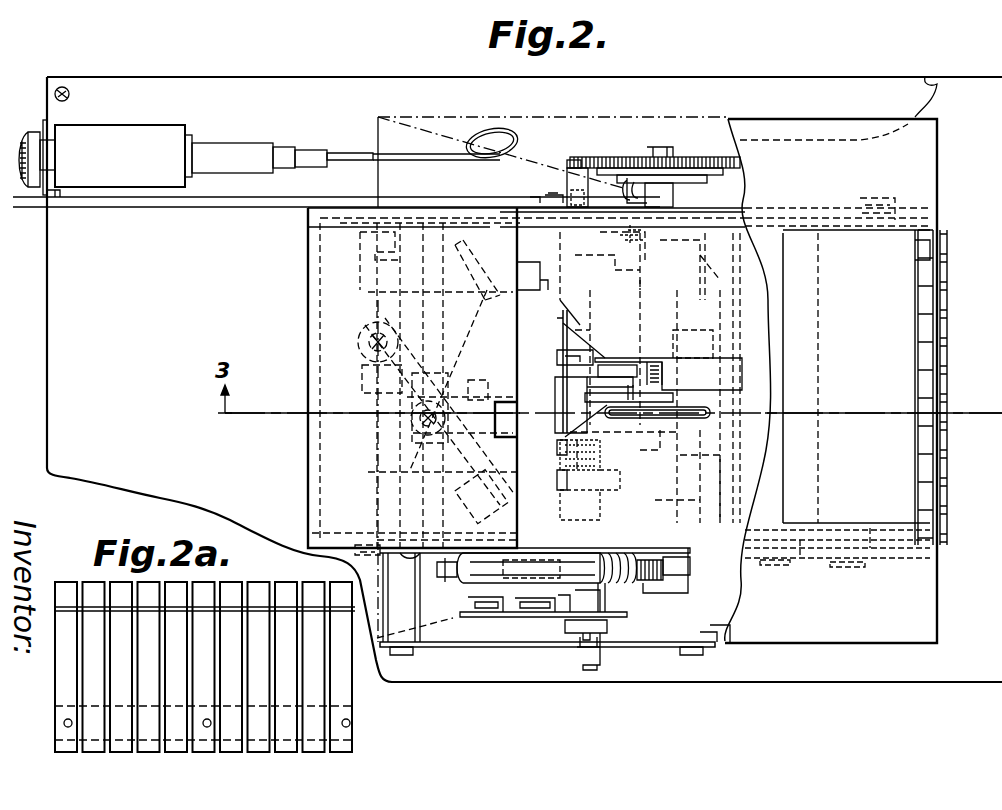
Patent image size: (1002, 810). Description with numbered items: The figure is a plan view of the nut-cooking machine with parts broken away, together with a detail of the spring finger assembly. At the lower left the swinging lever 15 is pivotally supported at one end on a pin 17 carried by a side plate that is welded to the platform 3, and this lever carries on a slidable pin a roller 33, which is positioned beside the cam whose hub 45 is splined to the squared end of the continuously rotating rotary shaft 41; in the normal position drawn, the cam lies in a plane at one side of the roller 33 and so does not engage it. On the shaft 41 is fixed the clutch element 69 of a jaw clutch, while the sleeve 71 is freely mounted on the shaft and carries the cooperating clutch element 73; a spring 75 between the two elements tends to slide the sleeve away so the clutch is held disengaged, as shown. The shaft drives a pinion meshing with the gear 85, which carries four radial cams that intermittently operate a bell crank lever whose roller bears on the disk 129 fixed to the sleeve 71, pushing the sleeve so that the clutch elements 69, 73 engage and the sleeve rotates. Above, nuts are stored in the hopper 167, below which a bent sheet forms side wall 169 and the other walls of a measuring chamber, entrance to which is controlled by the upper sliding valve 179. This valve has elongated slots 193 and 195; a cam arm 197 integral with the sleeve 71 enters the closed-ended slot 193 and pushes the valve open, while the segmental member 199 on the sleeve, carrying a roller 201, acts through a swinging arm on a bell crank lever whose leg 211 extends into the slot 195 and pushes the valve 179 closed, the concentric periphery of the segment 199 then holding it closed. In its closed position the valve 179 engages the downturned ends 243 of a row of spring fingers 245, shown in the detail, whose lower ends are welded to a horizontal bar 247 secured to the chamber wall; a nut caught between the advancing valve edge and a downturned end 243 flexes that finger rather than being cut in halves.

In FIG. 2, the platform 3 is at (58, 285).
In FIG. 2, the swinging lever 15 is at (493, 647).
In FIG. 2, the pin 17 is at (413, 610).
In FIG. 2, the roller 33 is at (610, 627).
In FIG. 2, the rotary shaft 41 is at (588, 320).
In FIG. 2, the hub 45 is at (633, 615).
In FIG. 2, the clutch element 69 is at (600, 448).
In FIG. 2, the sleeve 71 is at (562, 331).
In FIG. 2, the clutch element 73 is at (598, 495).
In FIG. 2, the spring 75 is at (603, 470).
In FIG. 2, the gear 85 is at (617, 160).
In FIG. 2, the disk 129 is at (548, 250).
In FIG. 2, the hopper 167 is at (777, 305).
In FIG. 2, the side wall 169 is at (730, 263).
In FIG. 2, the upper sliding valve 179 is at (560, 322).
In FIG. 2, the slot 193 is at (693, 420).
In FIG. 2, the slot 195 is at (690, 355).
In FIG. 2, the cam arm 197 is at (628, 398).
In FIG. 2, the segmental member 199 is at (578, 368).
In FIG. 2, the roller 201 is at (557, 354).
In FIG. 2, the leg of bell crank lever 211 is at (727, 373).
In FIG. 2, the downturned ends 243 is at (945, 295).
In FIG. 2A, the downturned ends 243 is at (68, 594).
In FIG. 2A, the spring fingers 245 is at (68, 655).
In FIG. 2A, the horizontal bar 247 is at (350, 740).